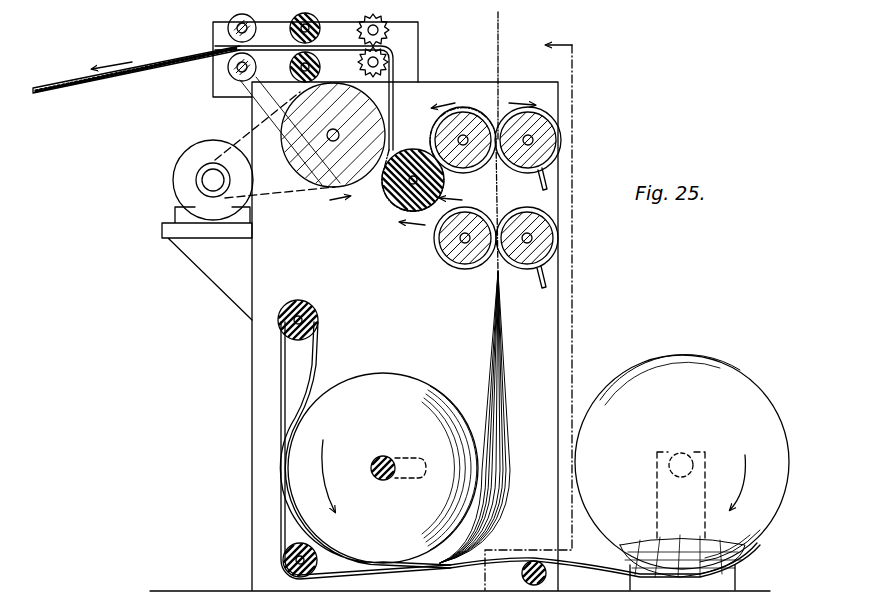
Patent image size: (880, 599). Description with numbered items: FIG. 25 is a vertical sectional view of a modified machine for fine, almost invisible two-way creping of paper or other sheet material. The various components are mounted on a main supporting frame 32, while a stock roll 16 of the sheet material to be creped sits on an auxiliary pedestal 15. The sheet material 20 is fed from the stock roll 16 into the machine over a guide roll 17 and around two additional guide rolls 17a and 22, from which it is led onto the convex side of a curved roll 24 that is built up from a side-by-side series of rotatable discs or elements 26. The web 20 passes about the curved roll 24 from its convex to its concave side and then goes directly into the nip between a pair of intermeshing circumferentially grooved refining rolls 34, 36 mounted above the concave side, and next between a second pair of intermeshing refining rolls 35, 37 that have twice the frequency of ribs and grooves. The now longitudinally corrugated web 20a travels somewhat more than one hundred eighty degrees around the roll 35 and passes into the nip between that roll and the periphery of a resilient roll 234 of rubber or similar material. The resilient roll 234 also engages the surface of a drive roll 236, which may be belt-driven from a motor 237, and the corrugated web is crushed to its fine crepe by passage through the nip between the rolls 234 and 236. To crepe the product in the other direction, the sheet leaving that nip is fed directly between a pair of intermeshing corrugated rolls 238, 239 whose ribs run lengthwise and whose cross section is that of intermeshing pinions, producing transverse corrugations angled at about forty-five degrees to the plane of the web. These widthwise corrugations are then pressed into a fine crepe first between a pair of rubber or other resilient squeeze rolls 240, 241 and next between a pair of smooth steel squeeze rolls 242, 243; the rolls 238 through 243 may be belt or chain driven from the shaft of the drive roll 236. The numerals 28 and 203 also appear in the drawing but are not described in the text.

The auxiliary pedestal 15 is at (725, 580).
The stock roll 16 is at (705, 390).
The guide roll 17 is at (533, 560).
The guide roll 17a is at (286, 560).
The sheet material 20 is at (278, 410).
The longitudinally corrugated web 20a is at (440, 112).
The guide roll 22 is at (305, 300).
The curved roll 24 is at (415, 373).
The rotatable discs 26 is at (515, 416).
The shaft 28 is at (380, 457).
The main supporting frame 32 is at (548, 362).
The refining roll 34 is at (462, 269).
The refining roll 35 is at (478, 110).
The refining roll 36 is at (526, 270).
The refining roll 37 is at (548, 125).
The web 203 is at (397, 130).
The resilient roll 234 is at (385, 208).
The drive roll 236 is at (300, 187).
The motor 237 is at (177, 193).
The intermeshing corrugated roll 238 is at (388, 62).
The intermeshing corrugated roll 239 is at (386, 26).
The resilient squeeze roll 240 is at (315, 66).
The resilient squeeze roll 241 is at (289, 47).
The smooth steel squeeze roll 242 is at (230, 72).
The smooth steel squeeze roll 243 is at (228, 33).